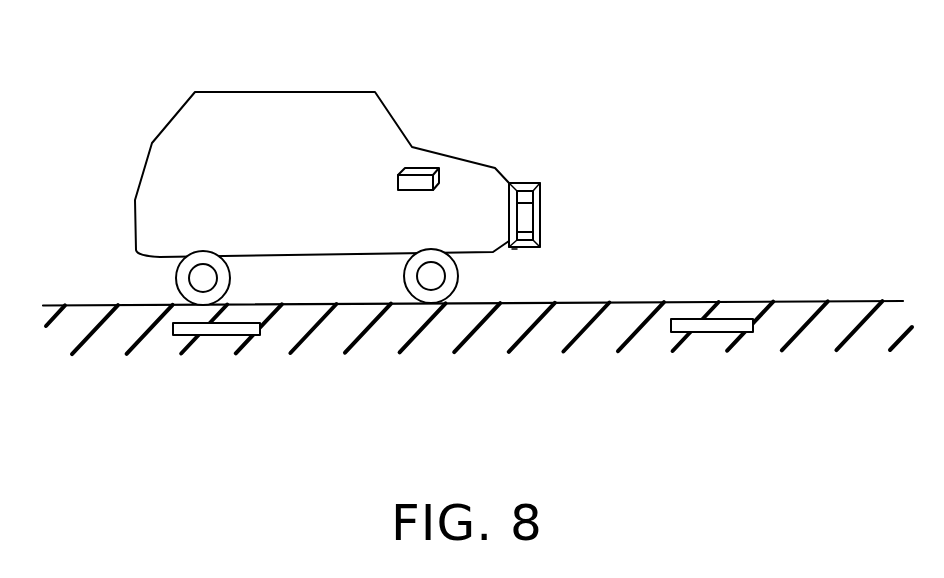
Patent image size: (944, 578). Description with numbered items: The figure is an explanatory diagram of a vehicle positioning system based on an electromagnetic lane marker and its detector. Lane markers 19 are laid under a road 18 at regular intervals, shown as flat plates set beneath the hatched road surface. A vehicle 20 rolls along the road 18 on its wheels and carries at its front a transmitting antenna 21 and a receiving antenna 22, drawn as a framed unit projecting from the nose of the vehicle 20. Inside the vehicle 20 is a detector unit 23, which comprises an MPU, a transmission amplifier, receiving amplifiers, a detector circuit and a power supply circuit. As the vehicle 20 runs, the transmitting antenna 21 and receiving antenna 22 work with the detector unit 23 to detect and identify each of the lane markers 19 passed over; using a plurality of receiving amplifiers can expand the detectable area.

The road 18 is at (818, 301).
The lane markers 19 is at (220, 335).
The vehicle 20 is at (357, 92).
The transmitting antenna 21 is at (535, 183).
The receiving antenna 22 is at (531, 222).
The detector unit 23 is at (425, 168).